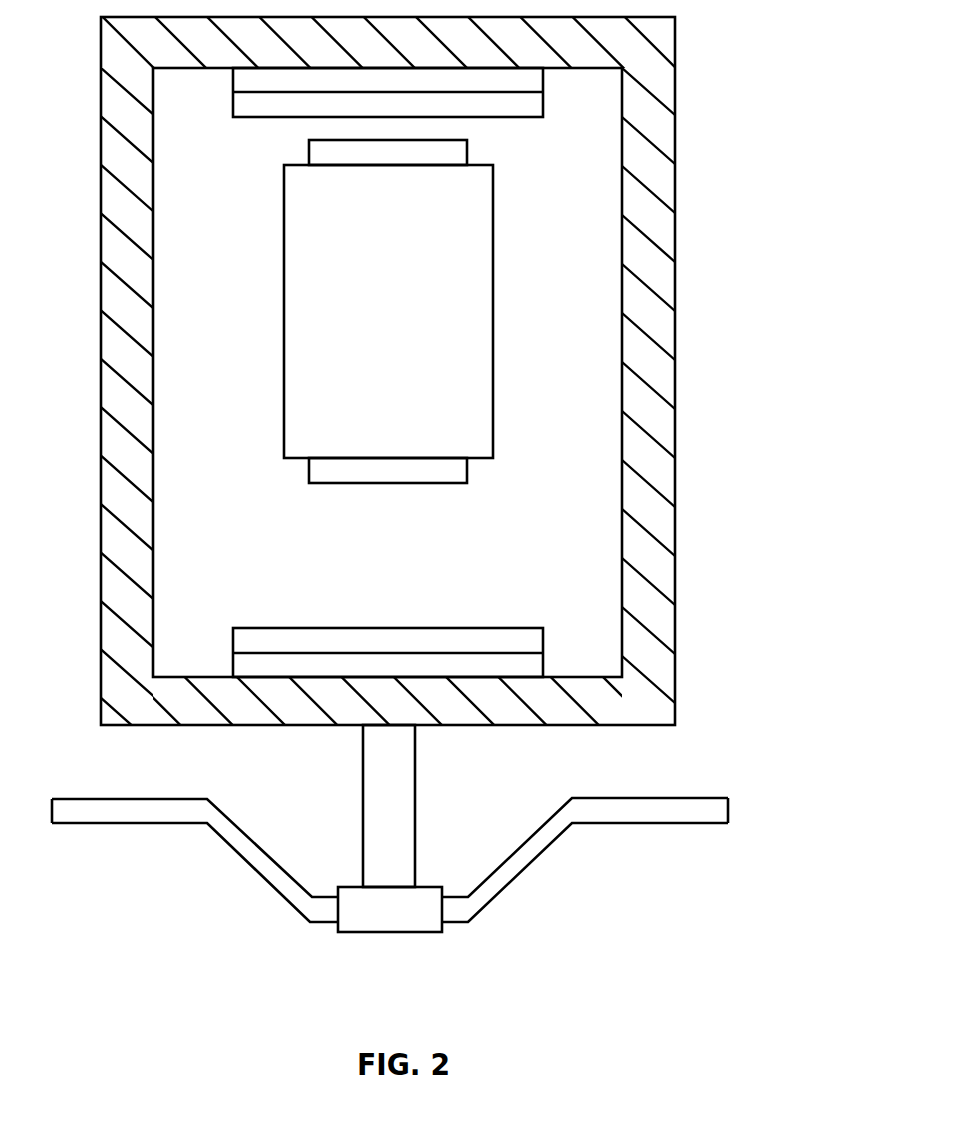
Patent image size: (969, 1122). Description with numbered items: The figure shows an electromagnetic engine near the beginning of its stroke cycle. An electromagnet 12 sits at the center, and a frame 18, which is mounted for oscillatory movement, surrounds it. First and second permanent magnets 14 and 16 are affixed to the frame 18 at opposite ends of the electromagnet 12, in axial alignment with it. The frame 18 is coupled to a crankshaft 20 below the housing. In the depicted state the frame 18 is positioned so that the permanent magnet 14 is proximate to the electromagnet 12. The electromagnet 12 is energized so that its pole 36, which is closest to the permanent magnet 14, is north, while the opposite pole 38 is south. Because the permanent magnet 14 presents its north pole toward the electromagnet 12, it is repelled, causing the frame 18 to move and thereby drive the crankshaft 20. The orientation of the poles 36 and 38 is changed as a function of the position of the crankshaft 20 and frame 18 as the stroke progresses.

The electromagnet 12 is at (493, 278).
The first permanent magnet 14 is at (258, 118).
The second permanent magnet 16 is at (253, 628).
The frame 18 is at (675, 167).
The crankshaft 20 is at (97, 823).
The pole 36 is at (462, 152).
The pole 38 is at (467, 470).